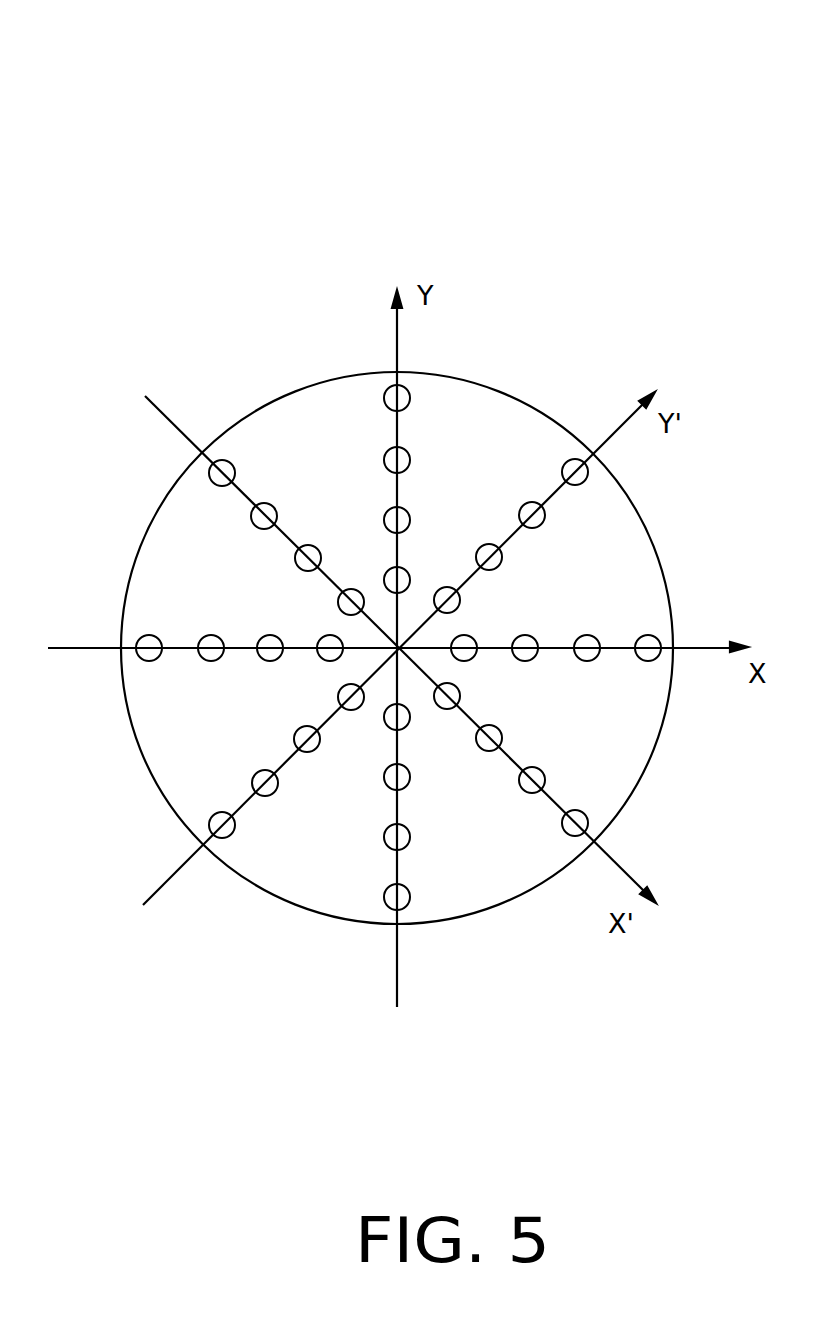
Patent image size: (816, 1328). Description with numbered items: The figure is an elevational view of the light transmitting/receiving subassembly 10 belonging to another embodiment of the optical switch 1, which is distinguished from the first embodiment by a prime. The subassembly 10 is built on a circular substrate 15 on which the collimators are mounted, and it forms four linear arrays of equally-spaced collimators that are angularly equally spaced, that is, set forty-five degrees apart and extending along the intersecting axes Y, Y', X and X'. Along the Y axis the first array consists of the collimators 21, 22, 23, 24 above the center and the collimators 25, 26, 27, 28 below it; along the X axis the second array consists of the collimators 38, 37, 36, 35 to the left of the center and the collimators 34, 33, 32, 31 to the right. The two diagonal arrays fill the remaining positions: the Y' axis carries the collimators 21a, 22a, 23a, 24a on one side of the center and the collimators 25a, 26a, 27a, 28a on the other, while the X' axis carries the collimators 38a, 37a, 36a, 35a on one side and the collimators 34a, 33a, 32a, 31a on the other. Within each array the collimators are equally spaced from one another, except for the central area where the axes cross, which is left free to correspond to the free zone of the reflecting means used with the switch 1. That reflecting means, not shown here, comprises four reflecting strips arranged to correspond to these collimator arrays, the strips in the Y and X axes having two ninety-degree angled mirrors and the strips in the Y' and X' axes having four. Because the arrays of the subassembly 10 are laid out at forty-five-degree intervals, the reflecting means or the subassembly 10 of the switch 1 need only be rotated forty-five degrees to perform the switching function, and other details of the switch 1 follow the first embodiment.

The optical switch 1 is at (315, 53).
The light transmitting/receiving subassembly 10 is at (257, 360).
The substrate 15 is at (198, 535).
The collimator 21 is at (410, 404).
The collimator 22 is at (410, 462).
The collimator 23 is at (410, 520).
The collimator 24 is at (410, 574).
The collimator 25 is at (386, 710).
The collimator 26 is at (384, 773).
The collimator 27 is at (386, 828).
The collimator 28 is at (386, 888).
The collimator 31 is at (649, 661).
The collimator 32 is at (586, 661).
The collimator 33 is at (525, 661).
The collimator 34 is at (468, 661).
The collimator 35 is at (327, 638).
The collimator 36 is at (272, 640).
The collimator 37 is at (215, 638).
The collimator 38 is at (155, 640).
The collimator 21a is at (567, 488).
The collimator 22a is at (528, 528).
The collimator 23a is at (490, 571).
The collimator 24a is at (452, 611).
The collimator 25a is at (343, 688).
The collimator 26a is at (300, 728).
The collimator 27a is at (262, 770).
The collimator 28a is at (227, 812).
The collimator 31a is at (562, 820).
The collimator 32a is at (520, 783).
The collimator 33a is at (478, 744).
The collimator 34a is at (437, 702).
The collimator 35a is at (368, 567).
The collimator 36a is at (307, 544).
The collimator 37a is at (276, 503).
The collimator 38a is at (235, 465).